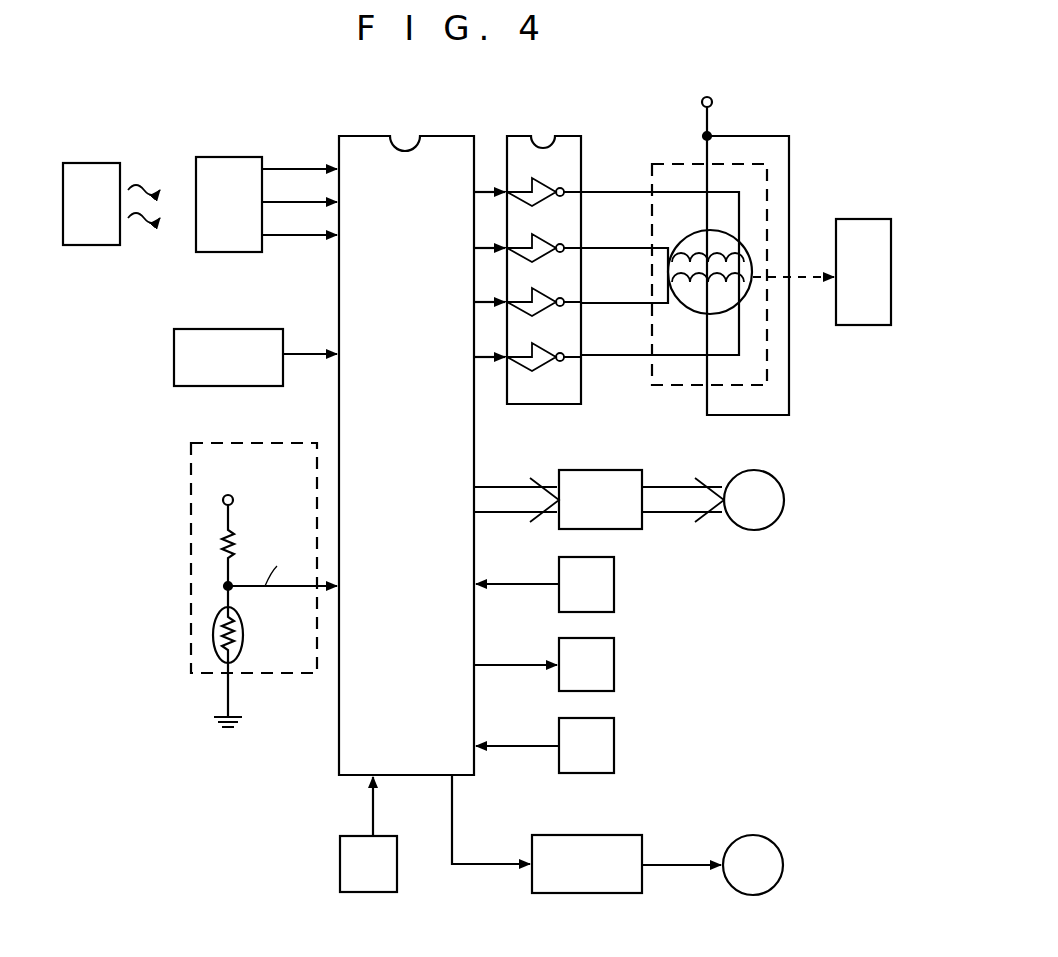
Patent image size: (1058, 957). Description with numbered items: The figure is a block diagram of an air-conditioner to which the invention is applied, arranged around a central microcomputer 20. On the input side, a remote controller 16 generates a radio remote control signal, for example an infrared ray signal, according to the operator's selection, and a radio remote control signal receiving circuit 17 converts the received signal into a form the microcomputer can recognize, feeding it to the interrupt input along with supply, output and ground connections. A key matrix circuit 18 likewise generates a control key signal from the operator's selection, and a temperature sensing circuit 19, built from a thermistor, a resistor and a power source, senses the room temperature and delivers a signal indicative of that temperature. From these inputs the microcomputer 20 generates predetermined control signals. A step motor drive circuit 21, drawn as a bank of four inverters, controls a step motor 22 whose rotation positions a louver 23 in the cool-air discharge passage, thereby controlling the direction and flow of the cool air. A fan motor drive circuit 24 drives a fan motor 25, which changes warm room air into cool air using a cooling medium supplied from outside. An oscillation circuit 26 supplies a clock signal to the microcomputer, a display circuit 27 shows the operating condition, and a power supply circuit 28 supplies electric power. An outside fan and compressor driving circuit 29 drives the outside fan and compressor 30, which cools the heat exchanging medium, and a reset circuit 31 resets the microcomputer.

The remote controller 16 is at (92, 175).
The radio remote control signal receiving circuit 17 is at (212, 165).
The key matrix circuit 18 is at (182, 363).
The temperature sensing circuit 19 is at (190, 514).
The microcomputer 20 is at (430, 148).
The step motor drive circuit 21 is at (564, 148).
The step motor 22 is at (676, 160).
The louver 23 is at (849, 234).
The fan motor drive circuit 24 is at (594, 486).
The fan motor 25 is at (773, 508).
The oscillation circuit 26 is at (606, 586).
The display circuit 27 is at (606, 665).
The power supply circuit 28 is at (606, 746).
The outside fan and compressor driving circuit 29 is at (602, 852).
The outside fan and compressor 30 is at (766, 854).
The reset circuit 31 is at (388, 879).